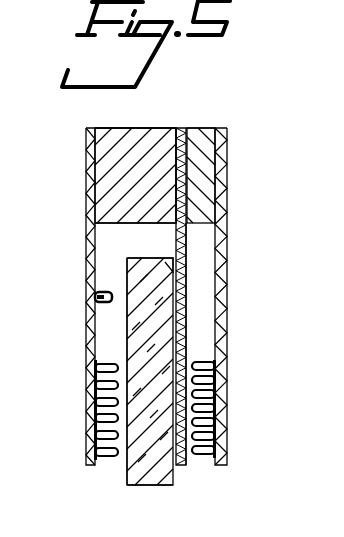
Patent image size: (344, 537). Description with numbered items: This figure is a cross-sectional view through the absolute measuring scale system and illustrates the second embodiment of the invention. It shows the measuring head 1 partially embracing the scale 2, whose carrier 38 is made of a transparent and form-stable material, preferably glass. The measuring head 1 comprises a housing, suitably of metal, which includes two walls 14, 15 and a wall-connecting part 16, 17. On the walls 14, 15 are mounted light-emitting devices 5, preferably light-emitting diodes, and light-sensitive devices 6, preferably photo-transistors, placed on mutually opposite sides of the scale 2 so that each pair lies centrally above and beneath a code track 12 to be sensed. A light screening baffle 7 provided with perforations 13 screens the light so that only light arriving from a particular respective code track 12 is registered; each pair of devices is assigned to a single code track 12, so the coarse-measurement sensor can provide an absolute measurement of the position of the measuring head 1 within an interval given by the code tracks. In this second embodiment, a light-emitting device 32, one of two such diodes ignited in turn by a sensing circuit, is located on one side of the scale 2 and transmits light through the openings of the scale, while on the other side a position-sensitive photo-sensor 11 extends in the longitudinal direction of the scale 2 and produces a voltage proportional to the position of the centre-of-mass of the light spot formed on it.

The measuring head 1 is at (137, 137).
The scale 2 is at (127, 258).
The light-emitting devices 5 is at (95, 410).
The light-sensitive devices 6 is at (214, 408).
The light screening baffle 7 is at (187, 466).
The position-sensitive photo-sensor 11 is at (168, 270).
The code track 12 is at (127, 350).
The perforations 13 is at (188, 362).
The wall 14 is at (86, 312).
The wall 15 is at (228, 312).
The wall-connecting part 16 is at (160, 137).
The wall-connecting part 17 is at (203, 137).
The light-emitting device 32 is at (97, 293).
The carrier 38 is at (150, 486).